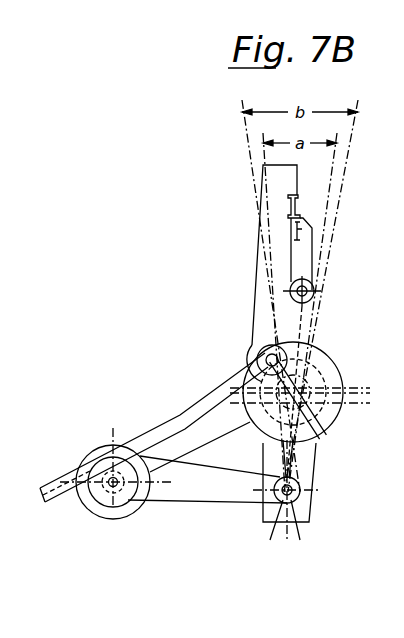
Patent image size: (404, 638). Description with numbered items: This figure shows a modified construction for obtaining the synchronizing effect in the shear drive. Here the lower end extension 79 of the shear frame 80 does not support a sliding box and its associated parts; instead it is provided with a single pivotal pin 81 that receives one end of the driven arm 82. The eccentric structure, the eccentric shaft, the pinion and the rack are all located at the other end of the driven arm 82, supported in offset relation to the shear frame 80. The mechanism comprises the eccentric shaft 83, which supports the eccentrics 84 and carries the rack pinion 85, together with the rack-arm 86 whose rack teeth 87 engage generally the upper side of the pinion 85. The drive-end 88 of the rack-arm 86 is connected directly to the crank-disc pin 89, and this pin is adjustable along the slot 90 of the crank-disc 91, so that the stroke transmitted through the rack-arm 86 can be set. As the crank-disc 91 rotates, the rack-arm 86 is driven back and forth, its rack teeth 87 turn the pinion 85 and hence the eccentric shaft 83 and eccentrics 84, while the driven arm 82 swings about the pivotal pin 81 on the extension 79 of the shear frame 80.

The lower end extension 79 is at (307, 505).
The shear frame 80 is at (257, 324).
The pivotal pin 81 is at (301, 488).
The driven arm 82 is at (235, 501).
The eccentric shaft 83 is at (108, 490).
The eccentrics 84 is at (101, 449).
The rack pinion 85 is at (128, 495).
The rack-arm 86 is at (193, 405).
The rack teeth 87 is at (143, 450).
The drive-end 88 is at (258, 362).
The crank-disc pin 89 is at (263, 353).
The slot 90 is at (312, 428).
The crank-disc 91 is at (336, 382).